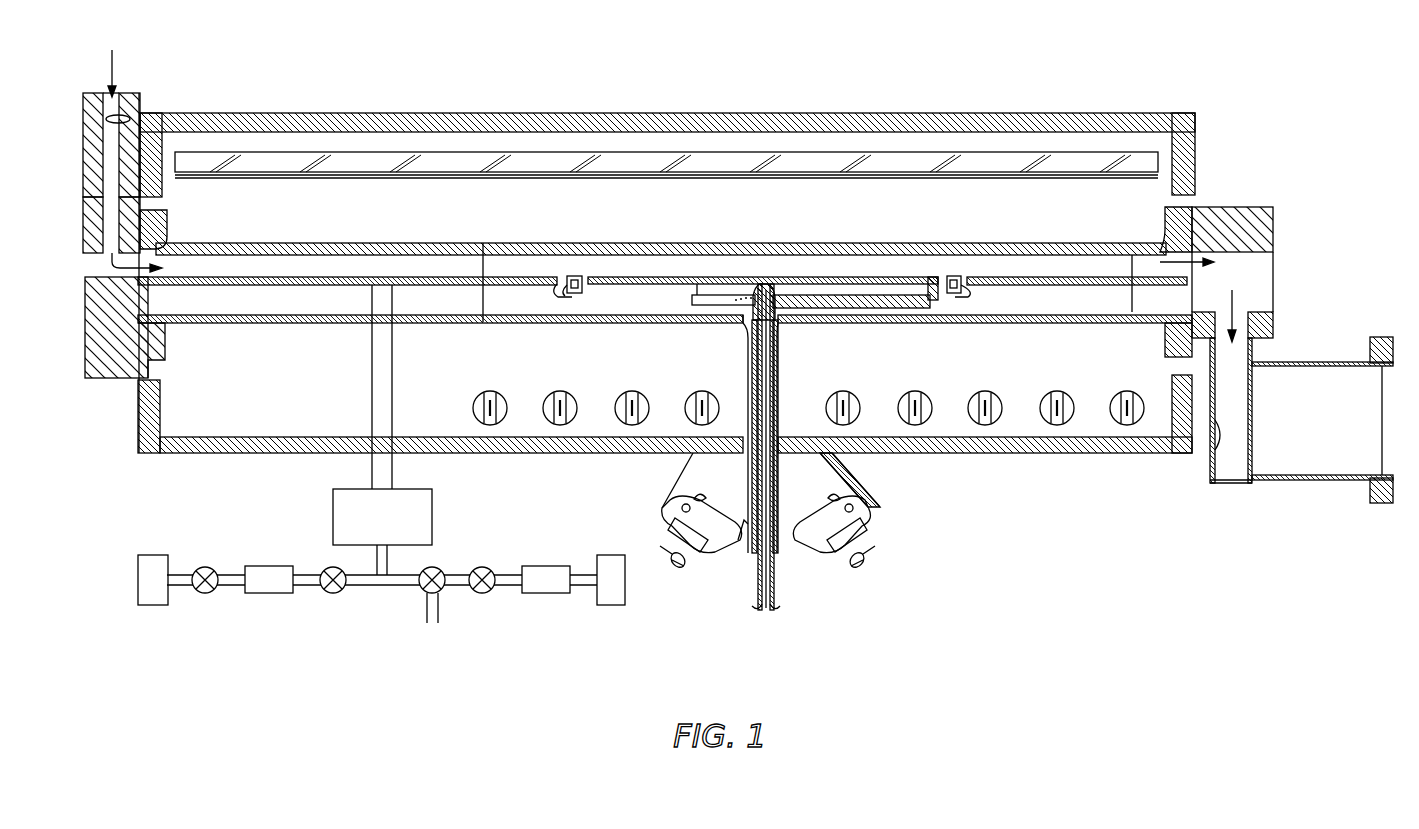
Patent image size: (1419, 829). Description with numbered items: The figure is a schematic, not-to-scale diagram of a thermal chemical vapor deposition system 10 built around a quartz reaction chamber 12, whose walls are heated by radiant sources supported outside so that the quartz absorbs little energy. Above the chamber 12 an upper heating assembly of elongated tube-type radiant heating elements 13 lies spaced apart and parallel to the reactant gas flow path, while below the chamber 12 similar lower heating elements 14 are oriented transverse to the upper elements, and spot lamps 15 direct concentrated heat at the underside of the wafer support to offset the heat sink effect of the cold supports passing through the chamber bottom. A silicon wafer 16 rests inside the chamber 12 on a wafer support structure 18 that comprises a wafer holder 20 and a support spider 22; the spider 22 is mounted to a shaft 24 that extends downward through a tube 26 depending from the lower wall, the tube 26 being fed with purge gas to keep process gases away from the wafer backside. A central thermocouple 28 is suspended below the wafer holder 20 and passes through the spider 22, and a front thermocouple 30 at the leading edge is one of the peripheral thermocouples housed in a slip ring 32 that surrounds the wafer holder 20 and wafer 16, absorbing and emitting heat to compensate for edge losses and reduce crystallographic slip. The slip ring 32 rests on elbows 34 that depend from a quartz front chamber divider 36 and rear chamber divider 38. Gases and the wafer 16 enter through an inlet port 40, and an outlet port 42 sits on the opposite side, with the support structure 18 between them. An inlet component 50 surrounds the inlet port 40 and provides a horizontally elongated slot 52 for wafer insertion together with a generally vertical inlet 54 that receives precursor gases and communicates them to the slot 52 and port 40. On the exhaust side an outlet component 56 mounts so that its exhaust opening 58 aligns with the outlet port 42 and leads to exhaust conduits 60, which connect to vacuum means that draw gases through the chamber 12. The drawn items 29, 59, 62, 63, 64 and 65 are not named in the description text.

The thermal CVD system 10 is at (1146, 95).
The reaction chamber 12 is at (1190, 222).
The upper heating elements 13 is at (750, 160).
The lower heating elements 14 is at (898, 420).
The spot lamps 15 is at (738, 555).
The silicon wafer 16 is at (745, 275).
The wafer support structure 18 is at (672, 304).
The wafer holder 20 is at (606, 292).
The support spider 22 is at (685, 290).
The shaft 24 is at (778, 366).
The tube 26 is at (780, 401).
The central thermocouple 28 is at (760, 300).
The fitting 29 is at (578, 308).
The front thermocouple 30 is at (955, 275).
The slip ring 32 is at (582, 295).
The elbows 34 is at (555, 296).
The front chamber divider 36 is at (440, 286).
The rear chamber divider 38 is at (1025, 288).
The inlet port 40 is at (126, 266).
The outlet port 42 is at (1160, 262).
The inlet component 50 is at (133, 90).
The slot 52 is at (103, 260).
The vertical inlet 54 is at (118, 122).
The outlet component 56 is at (1244, 200).
The exhaust opening 58 is at (1245, 255).
The exhaust pipe 59 is at (1213, 455).
The exhaust conduits 60 is at (432, 520).
The gas line 62 is at (380, 598).
The gas source 63 is at (610, 607).
The gas source 64 is at (152, 607).
The gas line 65 is at (442, 622).